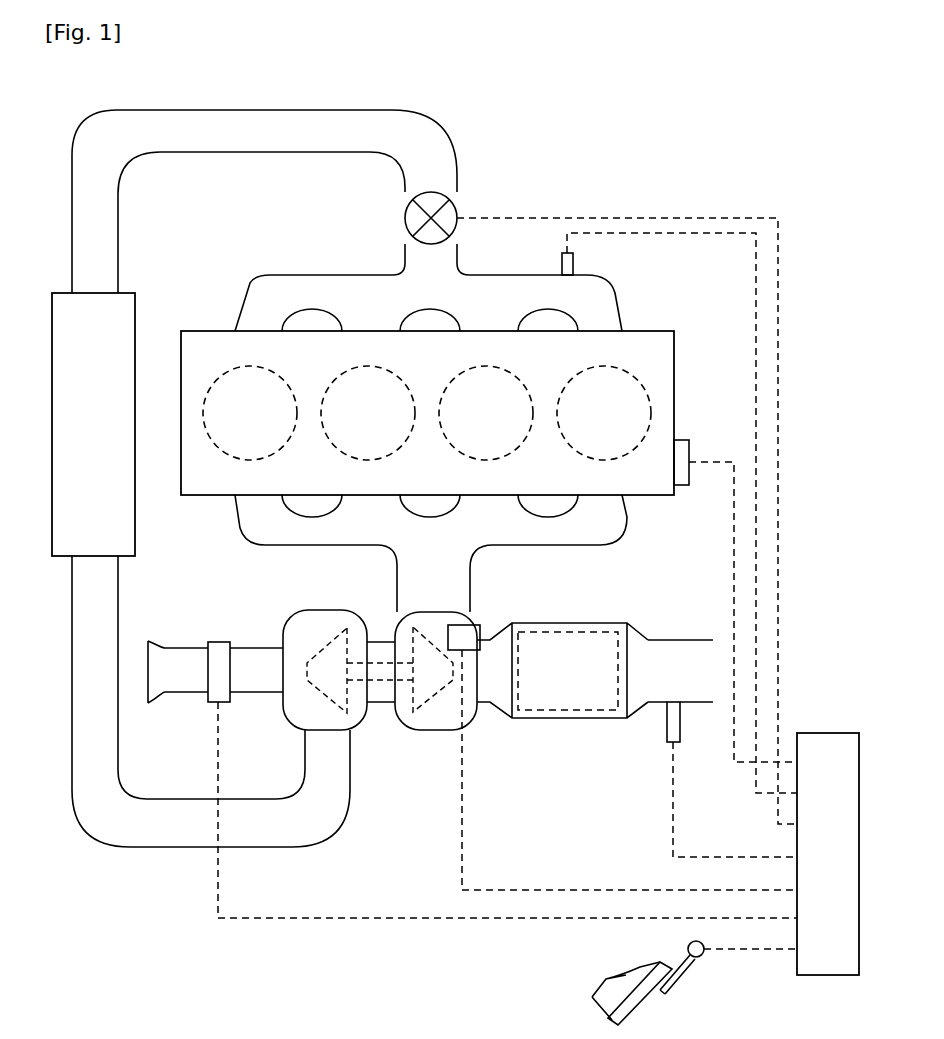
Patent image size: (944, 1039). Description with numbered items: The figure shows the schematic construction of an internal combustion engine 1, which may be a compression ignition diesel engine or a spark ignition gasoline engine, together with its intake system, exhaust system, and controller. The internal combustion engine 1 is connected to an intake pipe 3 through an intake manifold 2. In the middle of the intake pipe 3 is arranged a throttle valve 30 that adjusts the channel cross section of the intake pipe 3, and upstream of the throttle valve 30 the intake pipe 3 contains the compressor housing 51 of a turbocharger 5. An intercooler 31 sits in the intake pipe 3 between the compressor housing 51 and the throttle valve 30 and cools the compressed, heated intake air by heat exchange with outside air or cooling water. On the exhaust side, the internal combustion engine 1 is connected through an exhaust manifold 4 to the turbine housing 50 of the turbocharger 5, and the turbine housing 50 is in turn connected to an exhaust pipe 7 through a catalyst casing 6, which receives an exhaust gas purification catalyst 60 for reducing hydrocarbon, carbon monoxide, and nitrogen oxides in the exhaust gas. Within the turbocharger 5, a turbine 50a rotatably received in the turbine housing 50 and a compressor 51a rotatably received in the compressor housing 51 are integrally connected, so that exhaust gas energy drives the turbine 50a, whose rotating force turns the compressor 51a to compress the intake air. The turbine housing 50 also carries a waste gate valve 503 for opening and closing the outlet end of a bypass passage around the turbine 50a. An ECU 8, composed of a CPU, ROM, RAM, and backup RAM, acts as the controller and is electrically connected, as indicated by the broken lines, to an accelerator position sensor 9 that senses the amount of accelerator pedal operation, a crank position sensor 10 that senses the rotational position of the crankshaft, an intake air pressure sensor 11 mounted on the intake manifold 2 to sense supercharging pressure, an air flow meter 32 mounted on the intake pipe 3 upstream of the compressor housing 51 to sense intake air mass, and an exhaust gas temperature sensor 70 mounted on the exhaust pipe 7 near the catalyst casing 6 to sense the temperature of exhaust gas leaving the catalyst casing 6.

The internal combustion engine 1 is at (672, 331).
The intake manifold 2 is at (313, 273).
The intake pipe 3 is at (268, 108).
The throttle valve 30 is at (404, 216).
The intercooler 31 is at (135, 293).
The air flow meter 32 is at (210, 642).
The exhaust manifold 4 is at (630, 519).
The turbocharger 5 is at (388, 736).
The turbine housing 50 is at (478, 720).
The turbine 50a is at (420, 710).
The compressor housing 51 is at (293, 724).
The compressor 51a is at (325, 645).
The waste gate valve 503 is at (482, 628).
The catalyst casing 6 is at (604, 623).
The exhaust gas purification catalyst 60 is at (590, 710).
The exhaust pipe 7 is at (685, 640).
The exhaust gas temperature sensor 70 is at (667, 735).
The ECU 8 is at (820, 733).
The accelerator position sensor 9 is at (703, 957).
The crank position sensor 10 is at (690, 440).
The intake air pressure sensor 11 is at (562, 258).